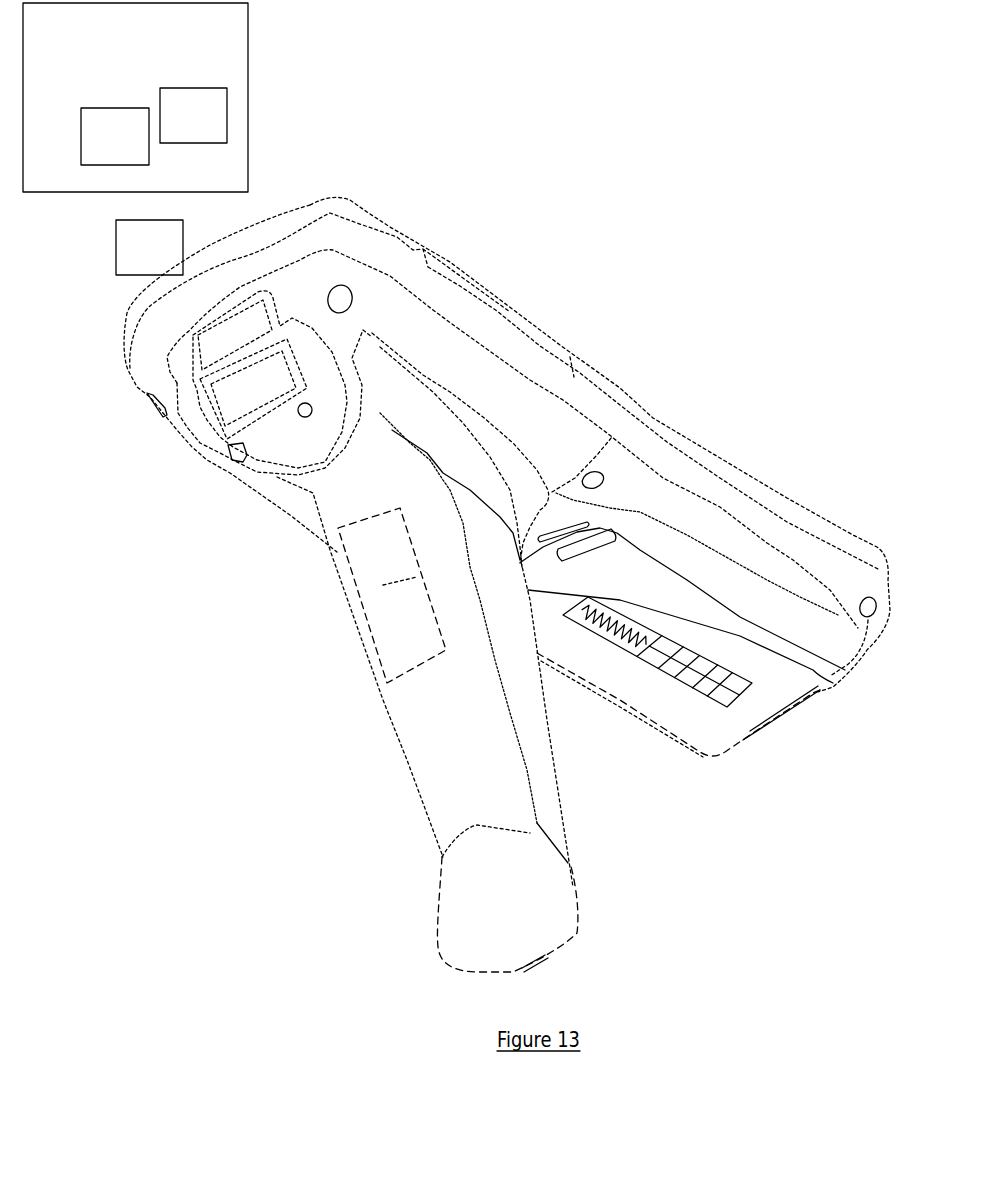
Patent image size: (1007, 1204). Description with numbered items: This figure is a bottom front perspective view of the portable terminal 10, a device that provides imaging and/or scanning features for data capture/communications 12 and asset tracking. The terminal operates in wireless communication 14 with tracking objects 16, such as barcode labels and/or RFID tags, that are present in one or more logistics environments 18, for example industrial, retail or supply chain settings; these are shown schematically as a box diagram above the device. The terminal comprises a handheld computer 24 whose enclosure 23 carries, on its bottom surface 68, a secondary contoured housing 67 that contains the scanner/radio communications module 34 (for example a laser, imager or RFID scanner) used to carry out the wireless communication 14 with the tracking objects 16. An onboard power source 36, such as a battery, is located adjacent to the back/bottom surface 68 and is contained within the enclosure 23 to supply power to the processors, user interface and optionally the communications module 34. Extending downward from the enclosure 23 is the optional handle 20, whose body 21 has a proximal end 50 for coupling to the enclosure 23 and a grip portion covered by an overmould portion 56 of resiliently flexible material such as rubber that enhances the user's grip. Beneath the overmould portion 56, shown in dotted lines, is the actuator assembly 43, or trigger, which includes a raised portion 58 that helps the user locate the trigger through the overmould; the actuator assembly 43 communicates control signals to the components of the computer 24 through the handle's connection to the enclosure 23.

The portable terminal 10 is at (698, 110).
The data capture/communications 12 is at (160, 271).
The wireless communication 14 is at (197, 250).
The tracking objects 16 is at (127, 160).
The logistics environments 18 is at (215, 55).
The handle 20 is at (434, 659).
The body 21 is at (530, 673).
The enclosure 23 is at (550, 422).
The handheld computer 24 is at (496, 508).
The scanner/radio communications module 34 is at (268, 438).
The onboard power source 36 is at (717, 720).
The actuator assembly 43 is at (380, 637).
The proximal end 50 is at (232, 450).
The overmould portion 56 is at (472, 768).
The raised portion 58 is at (380, 588).
The secondary contoured housing 67 is at (343, 430).
The bottom surface 68 is at (765, 550).